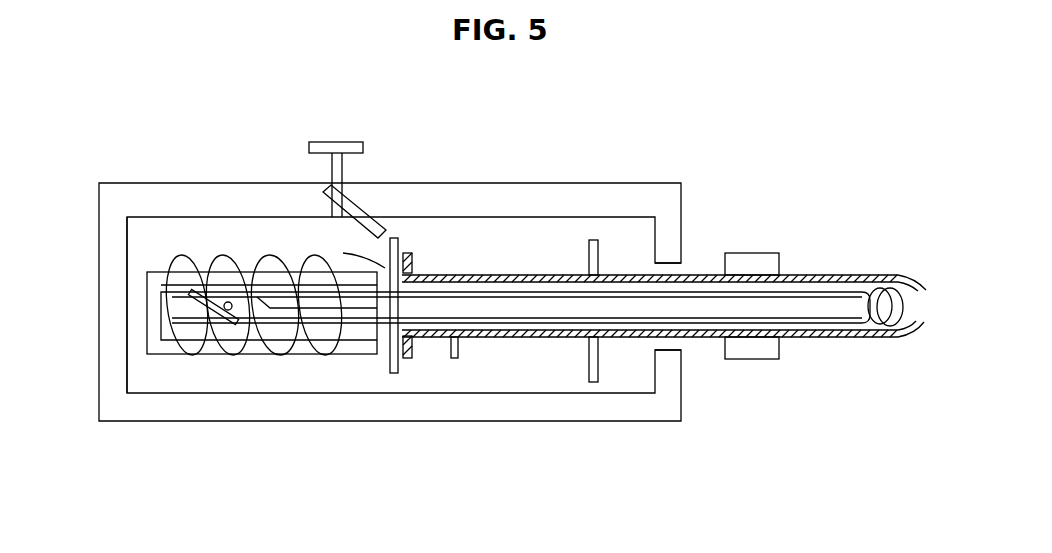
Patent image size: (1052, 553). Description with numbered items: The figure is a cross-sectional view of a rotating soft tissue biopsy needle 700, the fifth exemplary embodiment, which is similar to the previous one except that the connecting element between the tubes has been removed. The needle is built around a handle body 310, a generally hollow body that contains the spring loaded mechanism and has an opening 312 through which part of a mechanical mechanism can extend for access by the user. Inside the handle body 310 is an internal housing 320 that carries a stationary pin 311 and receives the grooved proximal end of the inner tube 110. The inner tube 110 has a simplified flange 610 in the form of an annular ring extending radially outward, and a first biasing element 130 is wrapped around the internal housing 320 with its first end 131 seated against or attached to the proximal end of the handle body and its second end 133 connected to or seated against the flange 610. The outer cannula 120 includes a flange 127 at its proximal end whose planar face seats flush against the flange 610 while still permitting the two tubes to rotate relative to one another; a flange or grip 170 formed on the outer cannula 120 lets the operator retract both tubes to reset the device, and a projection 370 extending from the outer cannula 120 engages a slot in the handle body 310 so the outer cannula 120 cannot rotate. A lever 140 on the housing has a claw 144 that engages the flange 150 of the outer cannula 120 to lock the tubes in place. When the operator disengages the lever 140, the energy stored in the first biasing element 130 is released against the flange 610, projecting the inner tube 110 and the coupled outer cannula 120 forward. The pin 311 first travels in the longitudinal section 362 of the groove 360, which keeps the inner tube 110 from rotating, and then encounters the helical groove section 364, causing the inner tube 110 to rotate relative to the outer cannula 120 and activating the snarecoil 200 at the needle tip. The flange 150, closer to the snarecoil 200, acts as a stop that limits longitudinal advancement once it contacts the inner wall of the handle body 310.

The rotating soft tissue biopsy needle 700 is at (507, 121).
The handle body 310 is at (126, 203).
The pin 311 is at (227, 301).
The opening 312 is at (667, 263).
The internal housing 320 is at (254, 300).
The first end of the biasing element 131 is at (127, 322).
The first biasing element 130 is at (265, 323).
The second end of the biasing element 133 is at (372, 259).
The lever 140 is at (337, 145).
The claw 144 is at (381, 230).
The flange (annular ring) of the outer cannula 150 is at (632, 362).
The flange or grip 170 is at (757, 252).
The inner tube 110 is at (815, 292).
The outer cannula 120 is at (805, 338).
The snarecoil 200 is at (878, 278).
The flange of the outer cannula 127 is at (413, 356).
The flange 610 is at (396, 368).
The groove 360 is at (240, 320).
The longitudinal groove section 362 is at (347, 314).
The helical groove section 364 is at (197, 312).
The projection 370 is at (458, 356).